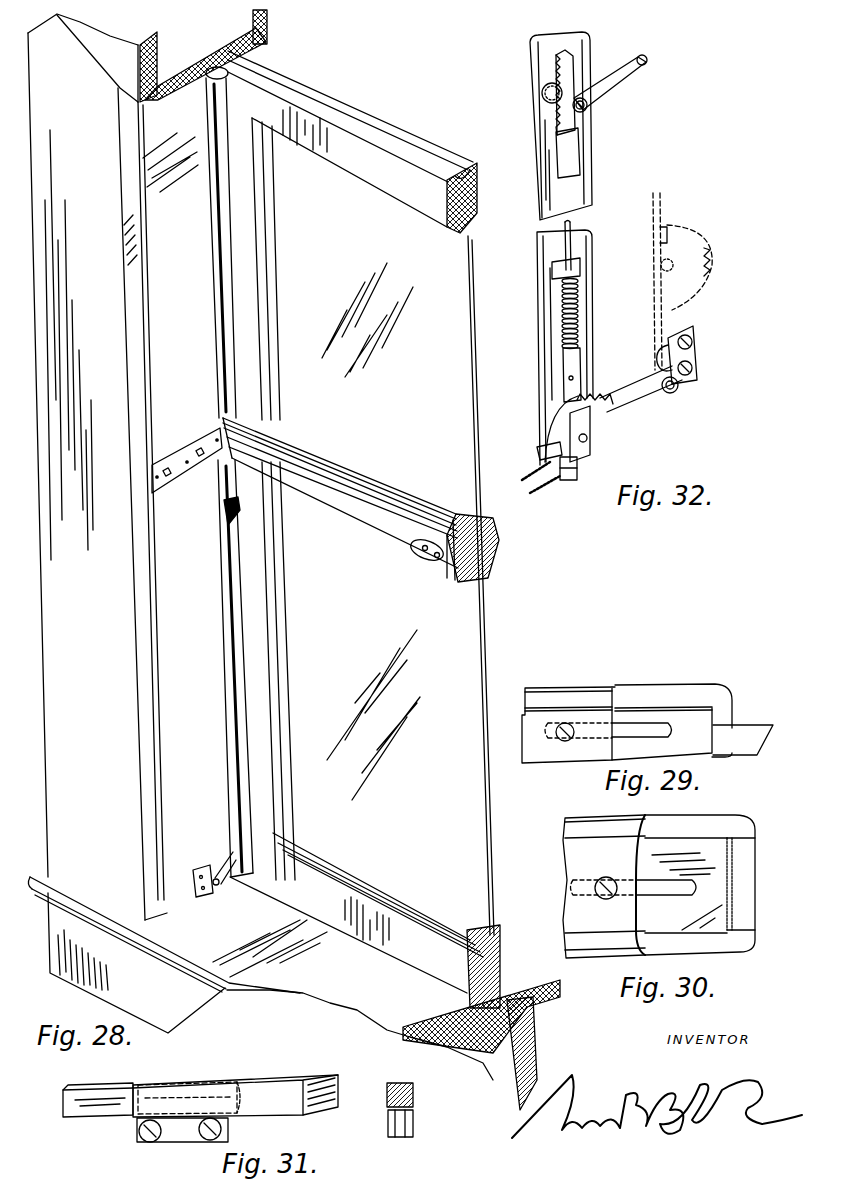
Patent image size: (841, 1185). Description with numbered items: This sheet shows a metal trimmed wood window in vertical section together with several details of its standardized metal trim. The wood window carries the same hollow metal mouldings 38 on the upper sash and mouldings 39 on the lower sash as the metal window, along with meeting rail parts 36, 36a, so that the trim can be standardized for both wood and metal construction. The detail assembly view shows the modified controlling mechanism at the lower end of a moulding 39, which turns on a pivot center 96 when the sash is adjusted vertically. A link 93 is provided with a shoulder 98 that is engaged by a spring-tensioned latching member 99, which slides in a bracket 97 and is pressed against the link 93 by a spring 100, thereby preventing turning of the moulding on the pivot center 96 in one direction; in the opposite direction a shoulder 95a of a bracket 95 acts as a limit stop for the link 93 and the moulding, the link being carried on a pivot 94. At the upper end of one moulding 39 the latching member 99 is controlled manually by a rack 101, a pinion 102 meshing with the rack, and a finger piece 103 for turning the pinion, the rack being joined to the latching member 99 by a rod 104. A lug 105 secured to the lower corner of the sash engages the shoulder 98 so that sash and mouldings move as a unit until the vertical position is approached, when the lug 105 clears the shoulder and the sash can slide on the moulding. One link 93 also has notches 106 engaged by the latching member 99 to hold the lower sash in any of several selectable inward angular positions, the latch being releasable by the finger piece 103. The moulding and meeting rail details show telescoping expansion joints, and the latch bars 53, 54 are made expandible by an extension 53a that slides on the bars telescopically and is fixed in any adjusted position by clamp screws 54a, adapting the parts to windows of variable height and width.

In FIG. 28, the side moulding 38 is at (212, 291).
In FIG. 28, the lower sash moulding 39 is at (228, 622).
In FIG. 32, the lower sash moulding 39 is at (590, 180).
In FIG. 28, the meeting rail part 36 is at (387, 532).
In FIG. 28, the meeting rail part 36a is at (412, 562).
In FIG. 28, the link 93 is at (226, 878).
In FIG. 32, the link 93 is at (637, 410).
In FIG. 32, the hinge pin 94 is at (680, 385).
In FIG. 28, the bracket 95 is at (206, 895).
In FIG. 32, the bracket 95 is at (660, 350).
In FIG. 32, the shoulder of bracket 95a is at (698, 345).
In FIG. 32, the pivot center 96 is at (590, 432).
In FIG. 32, the bracket 97 is at (558, 303).
In FIG. 32, the shoulder 98 is at (668, 238).
In FIG. 32, the latching member 99 is at (583, 350).
In FIG. 32, the spring 100 is at (582, 298).
In FIG. 32, the rack 101 is at (572, 135).
In FIG. 32, the pinion 102 is at (548, 90).
In FIG. 32, the finger piece 103 is at (648, 62).
In FIG. 32, the rod 104 is at (577, 245).
In FIG. 32, the lug 105 is at (537, 450).
In FIG. 32, the notch 106 is at (595, 392).
In FIG. 31, the latch bar 53 is at (93, 1090).
In FIG. 31, the latch bar 54 is at (235, 1096).
In FIG. 31, the extension 53a is at (282, 1110).
In FIG. 31, the clamp screw 54a is at (140, 1133).